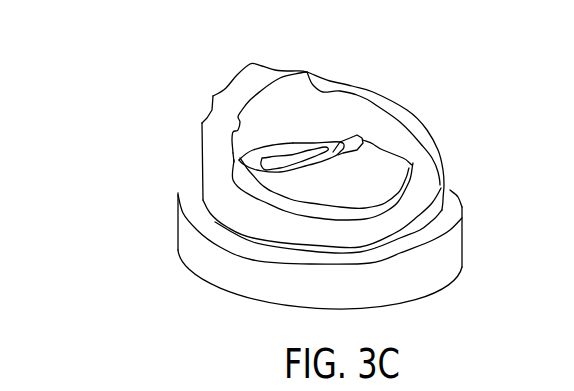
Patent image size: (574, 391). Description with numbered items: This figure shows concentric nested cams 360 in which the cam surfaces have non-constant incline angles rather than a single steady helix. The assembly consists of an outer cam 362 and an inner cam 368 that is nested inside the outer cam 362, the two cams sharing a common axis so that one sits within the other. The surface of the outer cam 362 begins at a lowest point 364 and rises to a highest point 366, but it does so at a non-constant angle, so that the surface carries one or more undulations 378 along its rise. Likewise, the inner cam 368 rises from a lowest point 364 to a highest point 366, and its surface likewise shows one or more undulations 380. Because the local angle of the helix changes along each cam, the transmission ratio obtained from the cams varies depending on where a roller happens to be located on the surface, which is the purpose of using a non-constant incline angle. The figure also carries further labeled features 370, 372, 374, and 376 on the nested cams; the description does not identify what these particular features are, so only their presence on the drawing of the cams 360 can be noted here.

The concentric nested cams 360 is at (78, 115).
The outer cam 362 is at (213, 192).
The lowest point 364 is at (383, 235).
The highest point 366 is at (258, 66).
The inner cam 368 is at (337, 190).
The elongated slot recess 370 is at (277, 147).
The rim notch / tab 372 is at (353, 138).
The floor edge near notch 374 is at (228, 160).
The inner rim of ring 376 is at (413, 163).
The undulations 378 is at (230, 113).
The undulations 380 is at (345, 156).